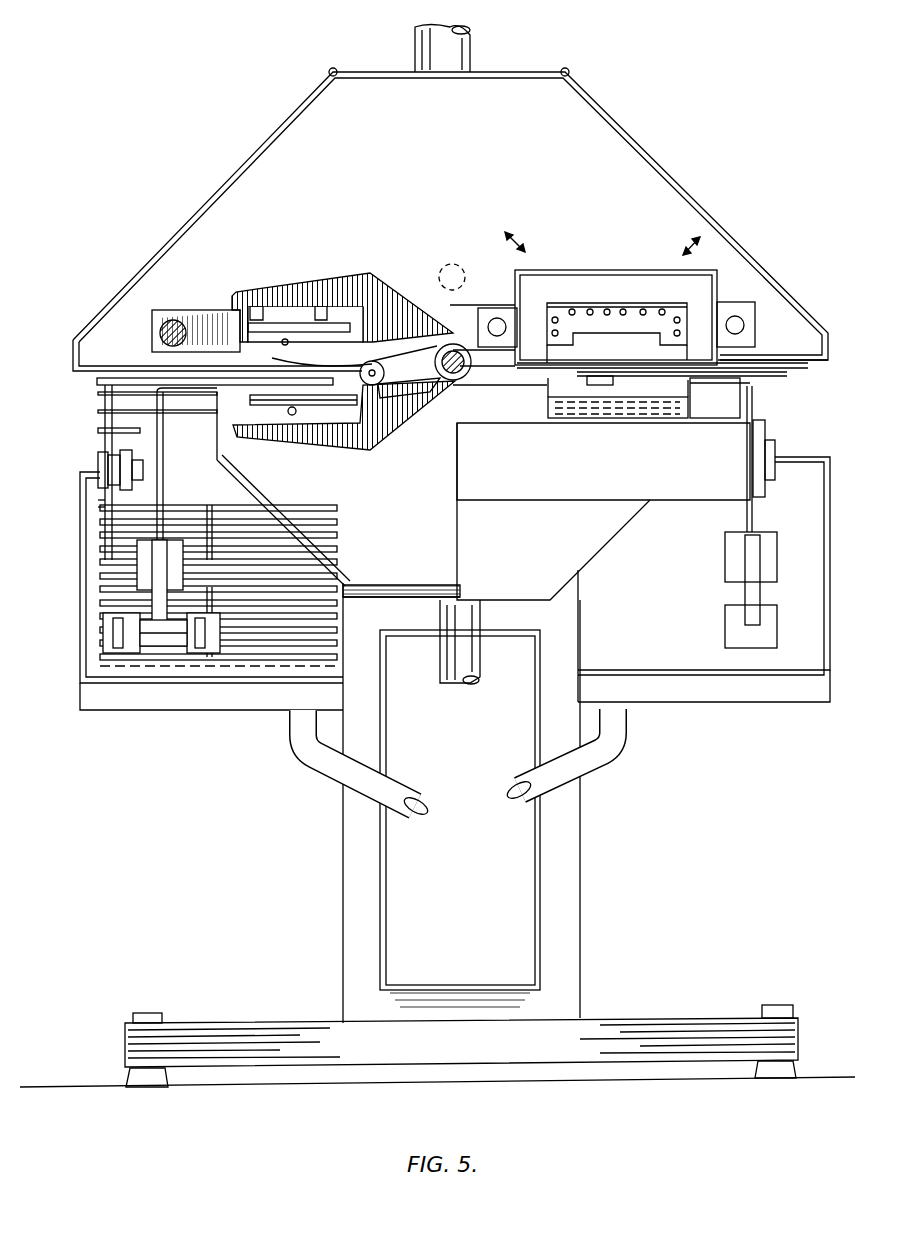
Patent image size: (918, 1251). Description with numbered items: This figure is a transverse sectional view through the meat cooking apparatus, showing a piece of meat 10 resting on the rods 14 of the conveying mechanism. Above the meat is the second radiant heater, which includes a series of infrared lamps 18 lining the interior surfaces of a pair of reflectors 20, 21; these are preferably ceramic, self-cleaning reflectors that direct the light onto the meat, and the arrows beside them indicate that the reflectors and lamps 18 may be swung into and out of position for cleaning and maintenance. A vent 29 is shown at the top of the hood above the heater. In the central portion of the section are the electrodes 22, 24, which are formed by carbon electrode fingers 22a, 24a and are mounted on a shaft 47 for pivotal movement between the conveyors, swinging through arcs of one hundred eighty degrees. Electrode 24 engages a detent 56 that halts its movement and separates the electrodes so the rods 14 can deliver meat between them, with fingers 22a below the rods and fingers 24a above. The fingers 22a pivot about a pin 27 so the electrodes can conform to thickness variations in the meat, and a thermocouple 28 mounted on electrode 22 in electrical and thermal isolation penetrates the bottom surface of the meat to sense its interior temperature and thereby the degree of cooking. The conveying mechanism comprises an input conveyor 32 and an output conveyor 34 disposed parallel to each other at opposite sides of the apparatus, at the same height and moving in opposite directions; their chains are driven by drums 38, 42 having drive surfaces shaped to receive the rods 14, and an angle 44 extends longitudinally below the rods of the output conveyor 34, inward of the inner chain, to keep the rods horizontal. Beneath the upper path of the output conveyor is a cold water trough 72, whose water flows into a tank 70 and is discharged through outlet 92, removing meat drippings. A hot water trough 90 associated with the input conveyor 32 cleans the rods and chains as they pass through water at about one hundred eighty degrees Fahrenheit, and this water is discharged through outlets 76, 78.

The piece of meat 10 is at (185, 364).
The rods 14 is at (100, 395).
The infrared lamps 18 is at (640, 307).
The reflector 20 is at (568, 305).
The reflector 21 is at (665, 305).
The electrode 22 is at (285, 445).
The electrode fingers 22a is at (330, 400).
The electrode 24 is at (277, 290).
The electrode fingers 24a is at (300, 330).
The pin 27 is at (292, 416).
The thermocouple 28 is at (290, 400).
The exhaust vent 29 is at (478, 45).
The input conveyor 32 is at (100, 505).
The output conveyor 34 is at (773, 560).
The drum 38 is at (100, 448).
The drum 42 is at (110, 640).
The angle 44 is at (607, 386).
The shaft 47 is at (447, 378).
The detent 56 is at (197, 313).
The tank 70 is at (600, 545).
The trough 72 is at (672, 423).
The outlet 76 is at (300, 757).
The outlet 78 is at (590, 760).
The trough 90 is at (182, 710).
The outlet 92 is at (455, 682).